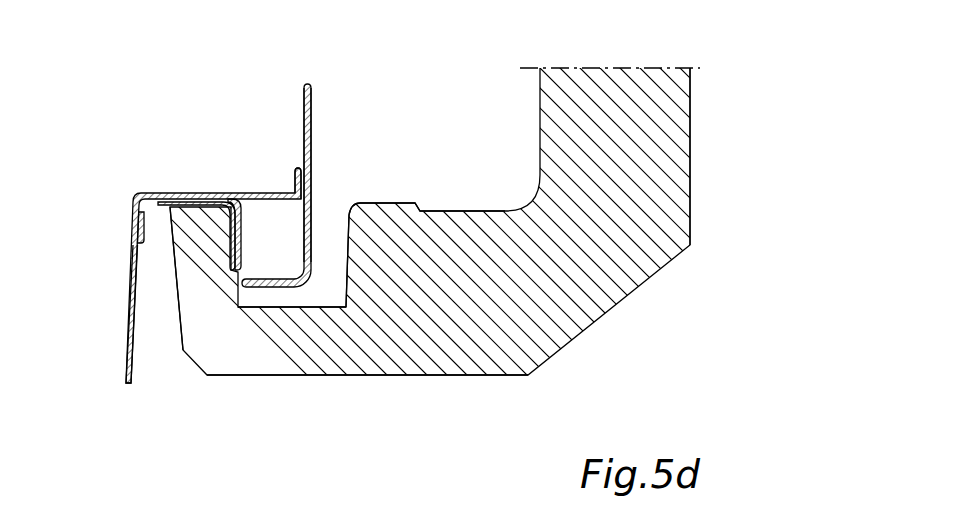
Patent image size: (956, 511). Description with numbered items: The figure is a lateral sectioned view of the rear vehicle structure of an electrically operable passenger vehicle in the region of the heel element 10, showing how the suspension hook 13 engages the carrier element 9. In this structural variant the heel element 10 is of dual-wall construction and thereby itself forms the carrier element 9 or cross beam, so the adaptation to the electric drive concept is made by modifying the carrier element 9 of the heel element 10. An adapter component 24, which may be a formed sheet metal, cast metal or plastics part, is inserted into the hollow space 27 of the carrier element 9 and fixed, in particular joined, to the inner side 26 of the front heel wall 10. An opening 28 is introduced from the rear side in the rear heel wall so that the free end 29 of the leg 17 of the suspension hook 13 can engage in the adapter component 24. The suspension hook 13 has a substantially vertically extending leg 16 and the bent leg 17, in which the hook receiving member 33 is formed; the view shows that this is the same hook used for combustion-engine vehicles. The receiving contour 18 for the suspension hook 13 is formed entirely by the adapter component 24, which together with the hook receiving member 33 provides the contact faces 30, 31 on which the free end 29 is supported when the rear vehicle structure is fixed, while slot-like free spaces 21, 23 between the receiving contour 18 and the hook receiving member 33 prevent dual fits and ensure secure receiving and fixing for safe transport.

The carrier element 9 is at (159, 211).
The heel element 10 is at (253, 193).
The suspension hook 13 is at (655, 128).
The vertically extending leg 16 is at (663, 213).
The leg 17 is at (462, 358).
The receiving contour 18 is at (282, 295).
The slot-like free space 21 is at (383, 205).
The slot-like free space 23 is at (350, 265).
The adapter component 24 is at (240, 200).
The inner side of the front heel wall 26 is at (142, 212).
The hollow space 27 is at (162, 250).
The opening 28 is at (174, 298).
The free end 29 is at (202, 206).
The contact face 30 is at (200, 223).
The contact face 31 is at (233, 226).
The hook receiving member 33 is at (322, 262).